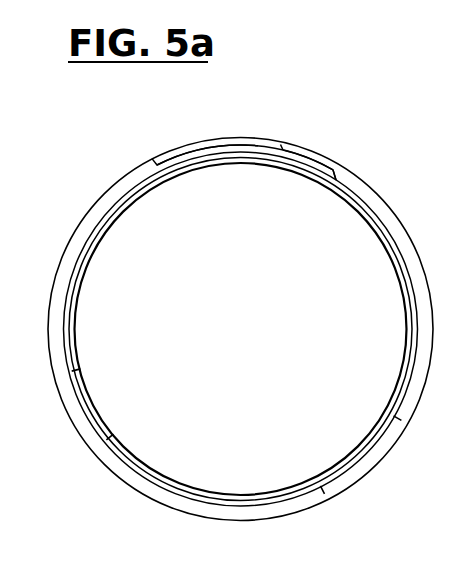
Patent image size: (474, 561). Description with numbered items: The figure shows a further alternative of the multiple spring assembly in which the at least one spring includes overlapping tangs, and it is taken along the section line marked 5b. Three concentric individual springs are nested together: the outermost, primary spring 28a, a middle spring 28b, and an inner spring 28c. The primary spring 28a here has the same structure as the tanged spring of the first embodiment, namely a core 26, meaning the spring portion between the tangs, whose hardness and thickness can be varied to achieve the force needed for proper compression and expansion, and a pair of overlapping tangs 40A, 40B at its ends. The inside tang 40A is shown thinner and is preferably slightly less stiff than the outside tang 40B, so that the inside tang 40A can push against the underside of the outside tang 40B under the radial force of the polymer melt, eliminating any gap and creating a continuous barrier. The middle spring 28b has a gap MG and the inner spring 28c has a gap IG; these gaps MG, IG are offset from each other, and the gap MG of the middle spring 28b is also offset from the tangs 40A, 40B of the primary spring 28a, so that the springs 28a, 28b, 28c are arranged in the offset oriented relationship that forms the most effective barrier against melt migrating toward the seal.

The core 26 is at (407, 231).
The outermost primary spring 28a is at (110, 195).
The middle spring 28b is at (86, 238).
The inner spring 28c is at (108, 226).
The inside tang 40A is at (166, 162).
The outside tang 40B is at (292, 148).
The section line 5b- 5b is at (256, 188).
The gap of inner spring IG is at (86, 362).
The gap of middle spring MG is at (410, 433).